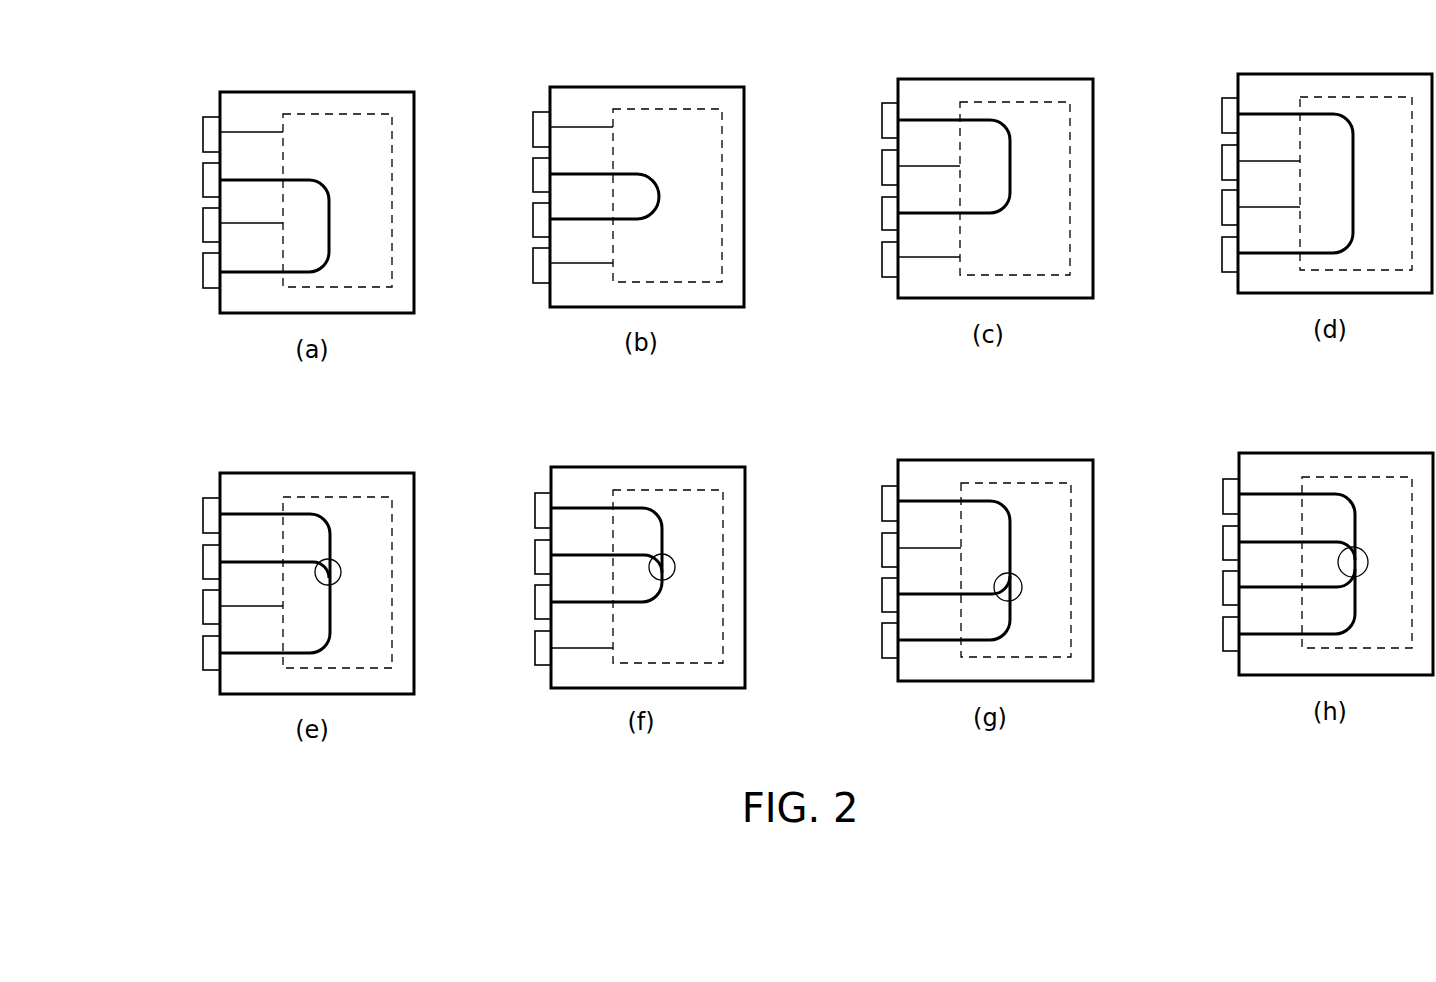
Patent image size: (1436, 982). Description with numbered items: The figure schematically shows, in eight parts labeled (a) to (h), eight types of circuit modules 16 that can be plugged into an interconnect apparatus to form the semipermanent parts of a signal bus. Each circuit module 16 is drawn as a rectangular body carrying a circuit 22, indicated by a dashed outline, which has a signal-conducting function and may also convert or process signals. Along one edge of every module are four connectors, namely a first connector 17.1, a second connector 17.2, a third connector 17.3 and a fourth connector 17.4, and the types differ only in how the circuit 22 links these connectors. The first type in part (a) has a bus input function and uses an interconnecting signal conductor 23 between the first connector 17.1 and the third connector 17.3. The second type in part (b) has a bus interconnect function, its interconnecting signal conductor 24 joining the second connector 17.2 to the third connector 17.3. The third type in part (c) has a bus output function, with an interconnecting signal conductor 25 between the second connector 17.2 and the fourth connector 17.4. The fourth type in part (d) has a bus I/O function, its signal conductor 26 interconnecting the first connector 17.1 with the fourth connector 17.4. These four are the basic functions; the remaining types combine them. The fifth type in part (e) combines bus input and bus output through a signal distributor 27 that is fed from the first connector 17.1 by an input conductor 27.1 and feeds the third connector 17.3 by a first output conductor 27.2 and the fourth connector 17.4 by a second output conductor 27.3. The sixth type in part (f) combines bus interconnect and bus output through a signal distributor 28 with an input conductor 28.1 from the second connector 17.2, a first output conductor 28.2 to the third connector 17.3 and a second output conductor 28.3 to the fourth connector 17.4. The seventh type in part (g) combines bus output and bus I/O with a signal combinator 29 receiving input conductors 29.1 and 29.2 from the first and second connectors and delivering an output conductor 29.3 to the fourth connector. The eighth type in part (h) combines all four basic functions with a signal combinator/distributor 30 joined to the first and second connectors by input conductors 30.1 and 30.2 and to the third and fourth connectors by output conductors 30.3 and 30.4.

The circuit module 16 is at (302, 90).
The circuit 22 is at (344, 114).
The first connector 17.1 is at (196, 270).
The second connector 17.2 is at (198, 606).
The third connector 17.3 is at (198, 562).
The fourth connector 17.4 is at (198, 515).
The interconnecting signal conductor 23 is at (333, 190).
The interconnecting signal conductor 24 is at (663, 183).
The interconnecting signal conductor 25 is at (1017, 163).
The signal conductor 26 is at (1360, 178).
The signal distributor 27 is at (343, 570).
The input conductor 27.1 is at (333, 603).
The first output conductor 27.2 is at (273, 557).
The second output conductor 27.3 is at (335, 543).
The signal distributor 28 is at (677, 566).
The input conductor 28.1 is at (637, 603).
The first output conductor 28.2 is at (602, 558).
The second output conductor 28.3 is at (665, 540).
The signal combinator 29 is at (1023, 585).
The input conductor 29.1 is at (1005, 637).
The input conductor 29.2 is at (928, 600).
The output conductor 29.3 is at (1015, 548).
The signal combinator/distributor 30 is at (1370, 560).
The input conductor 30.1 is at (1275, 635).
The input conductor 30.2 is at (1320, 590).
The output conductor 30.3 is at (1325, 540).
The output conductor 30.4 is at (1273, 493).